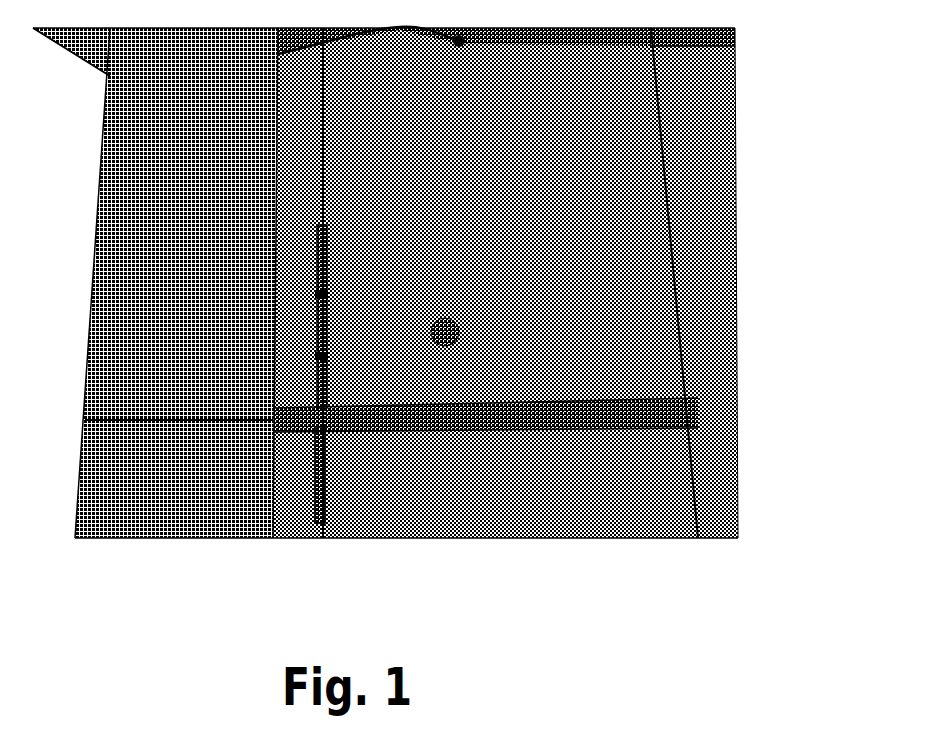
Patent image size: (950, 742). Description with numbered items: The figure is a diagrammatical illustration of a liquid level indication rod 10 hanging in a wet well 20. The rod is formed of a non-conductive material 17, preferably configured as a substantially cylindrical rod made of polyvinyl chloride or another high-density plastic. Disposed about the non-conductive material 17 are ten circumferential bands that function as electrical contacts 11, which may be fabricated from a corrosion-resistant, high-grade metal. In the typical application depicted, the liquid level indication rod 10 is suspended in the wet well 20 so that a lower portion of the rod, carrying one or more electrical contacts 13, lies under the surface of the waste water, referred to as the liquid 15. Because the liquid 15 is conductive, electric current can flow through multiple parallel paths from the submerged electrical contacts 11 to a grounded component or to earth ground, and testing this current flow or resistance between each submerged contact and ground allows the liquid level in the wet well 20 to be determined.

The liquid level indication rod 10 is at (401, 347).
The electrical contacts 11 is at (330, 236).
The submerged electrical contacts 13 is at (430, 428).
The liquid 15 is at (660, 480).
The non-conductive material 17 is at (322, 367).
The wet well 20 is at (614, 267).